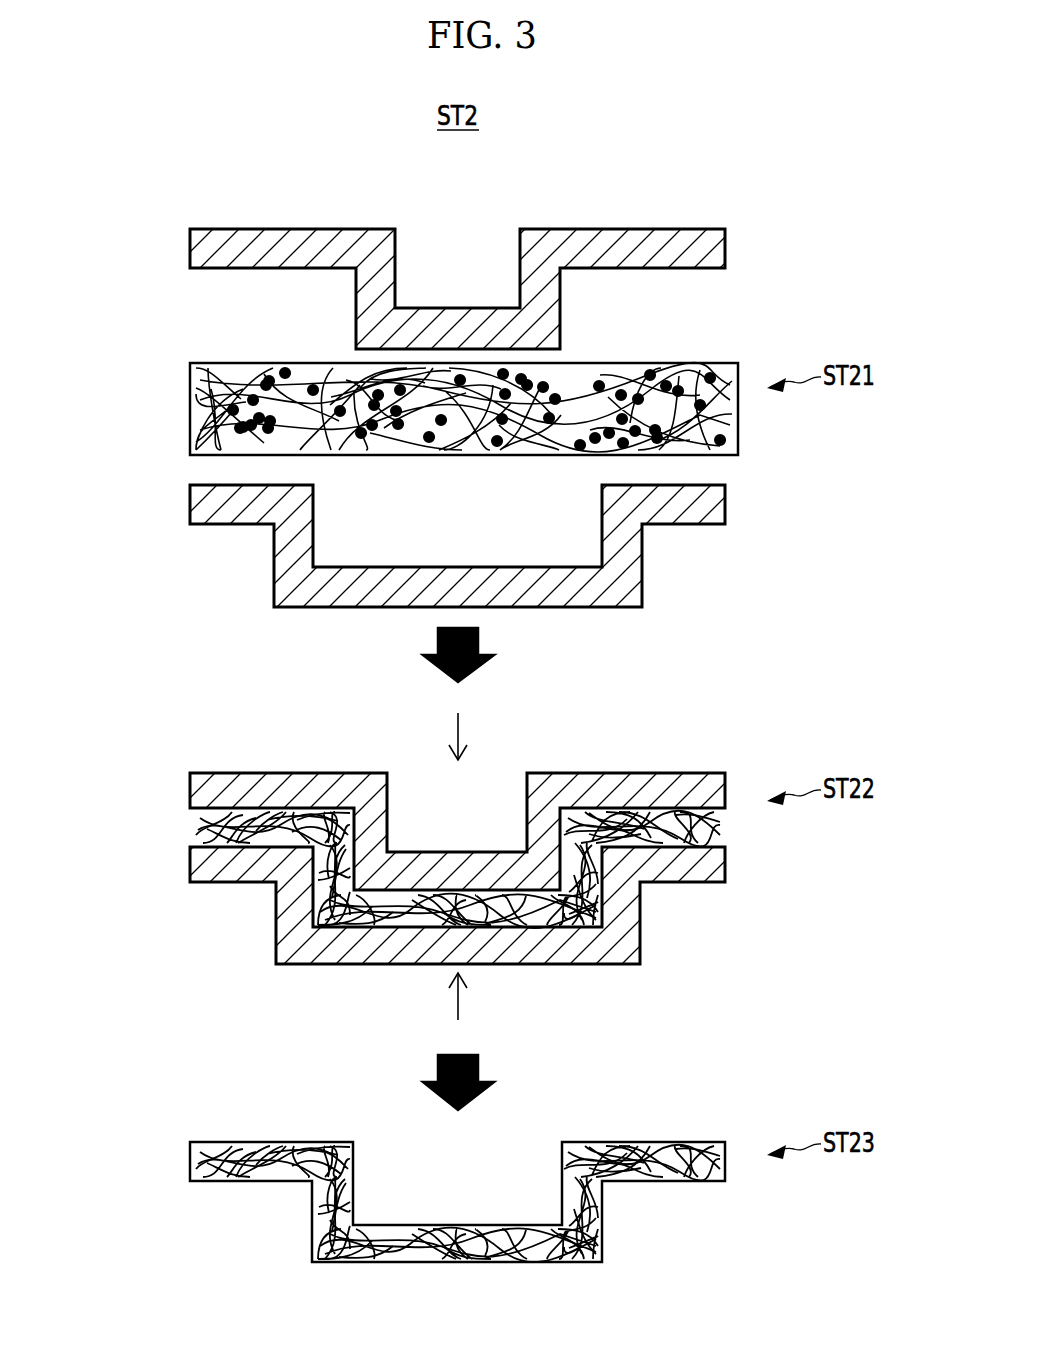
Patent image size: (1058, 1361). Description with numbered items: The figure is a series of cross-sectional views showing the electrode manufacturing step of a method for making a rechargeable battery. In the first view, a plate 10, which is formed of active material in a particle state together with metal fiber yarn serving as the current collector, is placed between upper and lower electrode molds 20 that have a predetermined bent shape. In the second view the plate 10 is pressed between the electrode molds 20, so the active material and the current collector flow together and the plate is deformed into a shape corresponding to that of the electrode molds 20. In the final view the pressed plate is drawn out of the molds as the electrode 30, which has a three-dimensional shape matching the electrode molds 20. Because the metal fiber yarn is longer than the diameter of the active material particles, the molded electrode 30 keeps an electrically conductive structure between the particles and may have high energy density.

The plate 10 is at (724, 360).
The electrode mold 20 is at (203, 508).
The electrode 30 is at (673, 1145).